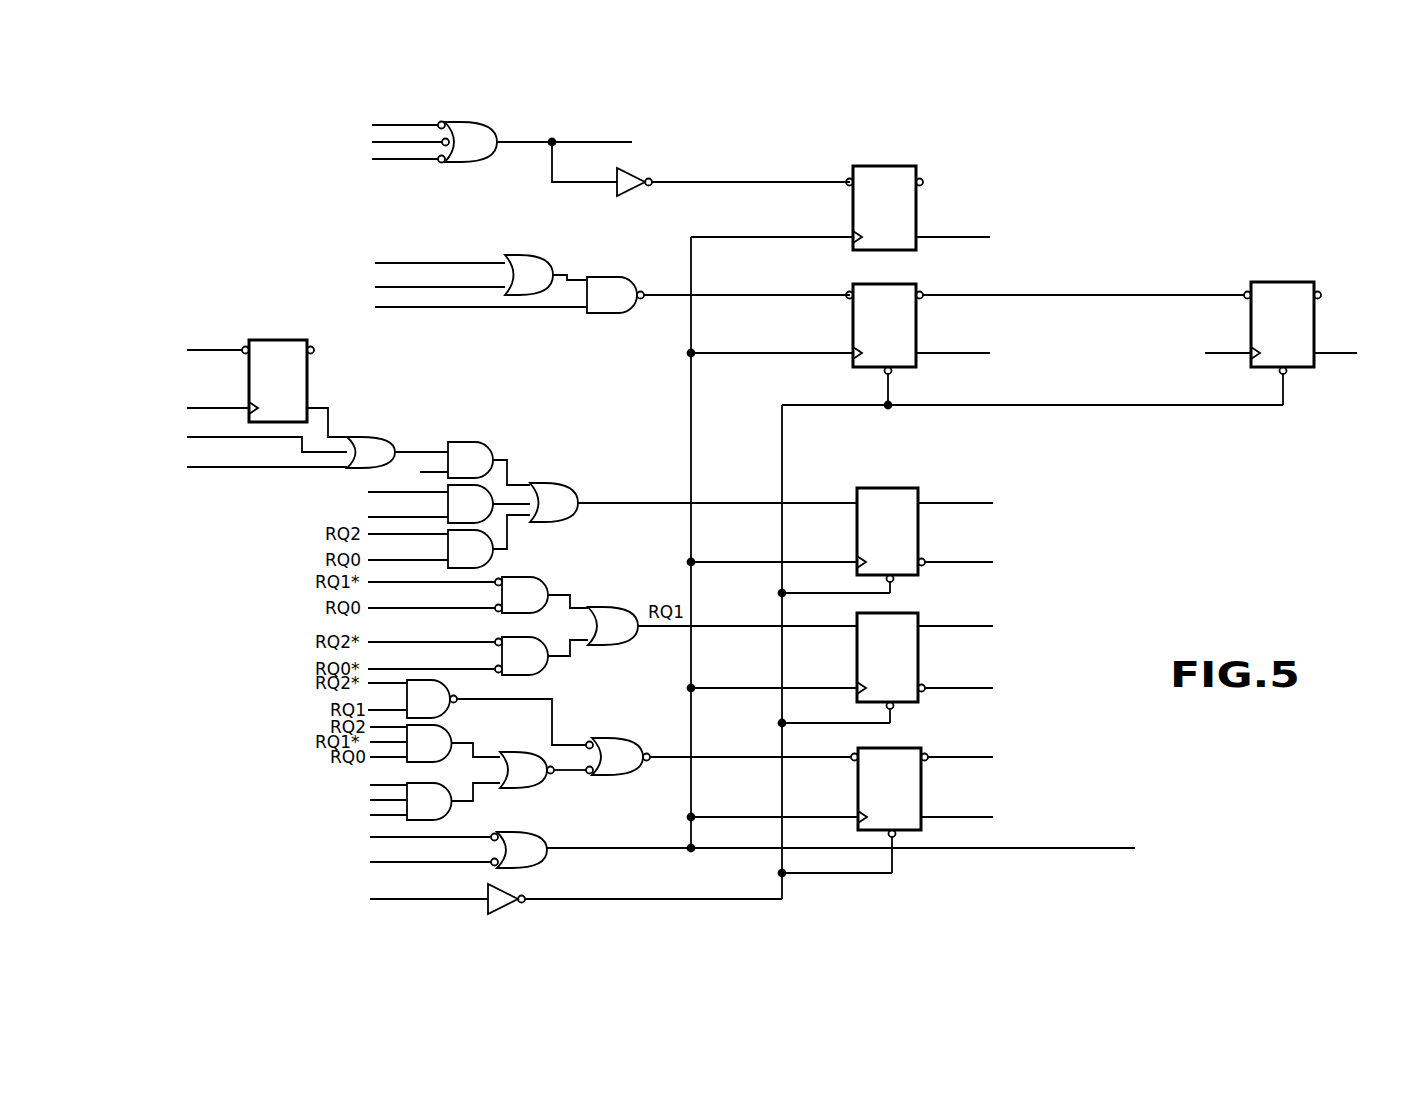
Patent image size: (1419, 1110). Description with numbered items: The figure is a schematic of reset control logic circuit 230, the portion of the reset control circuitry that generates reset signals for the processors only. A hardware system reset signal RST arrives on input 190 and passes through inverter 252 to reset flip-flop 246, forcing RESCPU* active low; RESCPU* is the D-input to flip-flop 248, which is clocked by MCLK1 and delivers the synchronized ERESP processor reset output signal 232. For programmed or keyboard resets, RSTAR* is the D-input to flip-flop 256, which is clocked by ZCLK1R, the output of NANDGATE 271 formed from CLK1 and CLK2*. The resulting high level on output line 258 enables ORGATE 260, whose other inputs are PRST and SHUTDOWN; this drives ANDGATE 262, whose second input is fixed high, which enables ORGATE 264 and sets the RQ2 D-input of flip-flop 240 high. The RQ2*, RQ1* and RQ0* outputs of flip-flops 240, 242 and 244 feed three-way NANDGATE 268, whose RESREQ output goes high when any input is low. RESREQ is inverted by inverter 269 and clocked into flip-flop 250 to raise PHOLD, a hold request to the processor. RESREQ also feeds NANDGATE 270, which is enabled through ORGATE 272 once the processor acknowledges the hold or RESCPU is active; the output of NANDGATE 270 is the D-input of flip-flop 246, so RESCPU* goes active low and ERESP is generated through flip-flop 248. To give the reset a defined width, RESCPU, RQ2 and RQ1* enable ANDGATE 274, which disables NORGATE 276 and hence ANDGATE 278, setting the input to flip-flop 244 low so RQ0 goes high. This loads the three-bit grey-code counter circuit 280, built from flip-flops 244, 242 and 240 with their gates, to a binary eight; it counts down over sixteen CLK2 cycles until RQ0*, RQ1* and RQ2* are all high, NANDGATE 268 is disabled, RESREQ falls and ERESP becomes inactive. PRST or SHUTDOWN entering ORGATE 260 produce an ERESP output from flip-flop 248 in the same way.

The hardware system reset input 190 is at (392, 900).
The reset control logic circuit 230 is at (203, 664).
The processor reset output signal 232 is at (1345, 351).
The flip-flop 240 is at (900, 489).
The flip-flop 242 is at (900, 614).
The flip-flop 244 is at (903, 748).
The flip-flop 246 is at (895, 284).
The flip-flop 248 is at (1292, 270).
The flip-flop 250 is at (894, 163).
The inverter 252 is at (496, 915).
The flip-flop 256 is at (270, 340).
The output line 258 is at (322, 398).
The ORGATE 260 is at (385, 432).
The ANDGATE 262 is at (468, 441).
The ORGATE 264 is at (569, 478).
The three-way NANDGATE 268 is at (474, 121).
The inverter 269 is at (633, 197).
The NANDGATE 270 is at (600, 316).
The NANDGATE 271 is at (530, 832).
The ORGATE 272 is at (522, 256).
The ANDGATE 274 is at (507, 520).
The NORGATE 276 is at (517, 742).
The ANDGATE 278 is at (620, 777).
The counter circuit 280 is at (1137, 578).